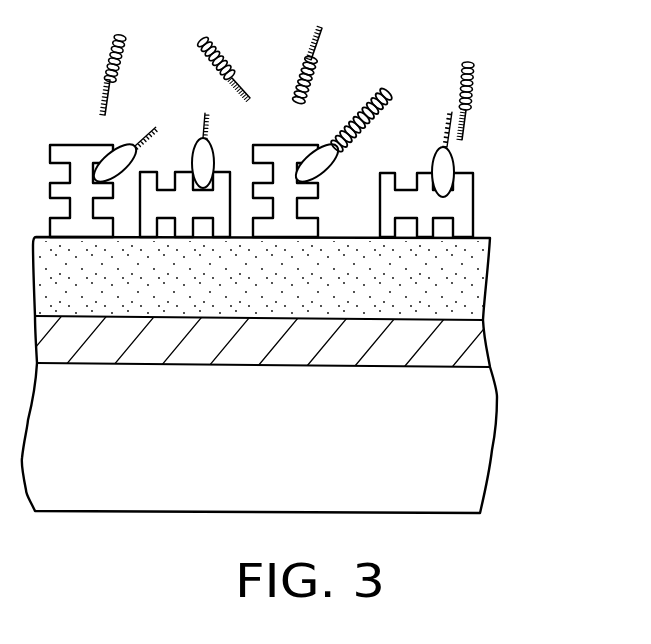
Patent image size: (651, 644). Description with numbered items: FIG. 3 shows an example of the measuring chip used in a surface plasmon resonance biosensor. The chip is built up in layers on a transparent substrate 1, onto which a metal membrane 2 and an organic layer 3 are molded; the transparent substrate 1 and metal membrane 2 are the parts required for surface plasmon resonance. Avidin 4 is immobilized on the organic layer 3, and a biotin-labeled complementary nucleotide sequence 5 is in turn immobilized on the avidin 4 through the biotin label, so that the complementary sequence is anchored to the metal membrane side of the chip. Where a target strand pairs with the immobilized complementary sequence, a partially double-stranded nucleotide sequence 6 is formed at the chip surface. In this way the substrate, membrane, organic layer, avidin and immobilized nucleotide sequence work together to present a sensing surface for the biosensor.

The transparent substrate 1 is at (463, 440).
The metal membrane 2 is at (463, 345).
The organic layer 3 is at (478, 273).
The avidin 4 is at (472, 200).
The biotin-labeled complementary nucleotide sequence 5 is at (465, 162).
The partially double-stranded nucleotide sequence 6 is at (477, 82).